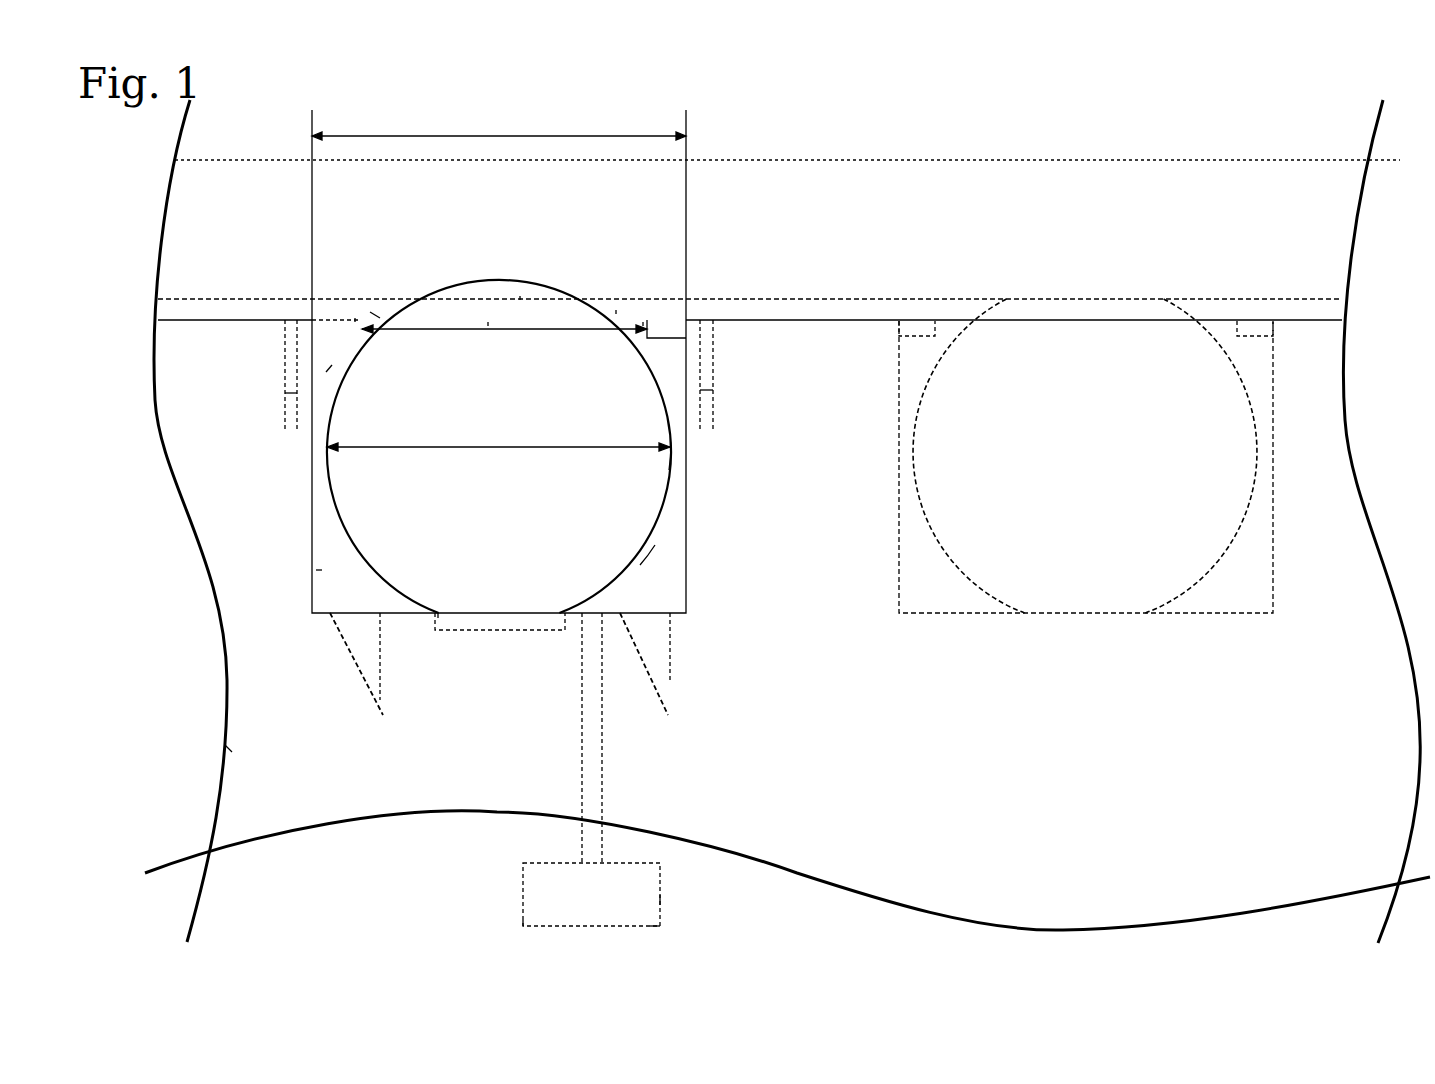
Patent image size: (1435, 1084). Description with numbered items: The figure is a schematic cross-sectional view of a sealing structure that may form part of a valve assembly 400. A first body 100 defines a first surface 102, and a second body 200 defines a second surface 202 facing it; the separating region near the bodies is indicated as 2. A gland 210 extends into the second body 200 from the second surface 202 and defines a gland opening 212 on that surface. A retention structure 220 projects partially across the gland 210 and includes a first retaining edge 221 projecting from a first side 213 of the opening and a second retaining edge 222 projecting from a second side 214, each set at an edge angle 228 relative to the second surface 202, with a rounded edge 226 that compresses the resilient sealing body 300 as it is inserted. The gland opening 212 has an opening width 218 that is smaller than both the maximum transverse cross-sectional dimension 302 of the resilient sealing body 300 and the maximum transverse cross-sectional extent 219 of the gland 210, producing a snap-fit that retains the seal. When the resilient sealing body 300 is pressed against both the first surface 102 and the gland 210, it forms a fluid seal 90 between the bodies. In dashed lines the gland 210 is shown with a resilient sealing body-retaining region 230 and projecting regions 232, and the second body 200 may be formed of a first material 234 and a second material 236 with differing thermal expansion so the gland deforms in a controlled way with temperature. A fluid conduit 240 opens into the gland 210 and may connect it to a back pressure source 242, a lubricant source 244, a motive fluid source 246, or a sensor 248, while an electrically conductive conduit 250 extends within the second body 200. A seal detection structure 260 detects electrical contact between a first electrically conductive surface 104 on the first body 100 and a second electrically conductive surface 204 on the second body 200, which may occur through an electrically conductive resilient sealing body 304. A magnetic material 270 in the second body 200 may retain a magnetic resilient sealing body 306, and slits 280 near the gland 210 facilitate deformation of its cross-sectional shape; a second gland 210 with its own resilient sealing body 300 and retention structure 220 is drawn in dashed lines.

The wall layer 2 is at (1410, 148).
The fluid seal 90 is at (617, 311).
The first body 100 is at (154, 244).
The first surface 102 is at (201, 300).
The first electrically conductive surface 104 is at (524, 297).
The second body 200 is at (216, 636).
The second surface 202 is at (178, 321).
The second electrically conductive surface 204 is at (440, 630).
The gland 210 is at (686, 590).
The gland opening 212 is at (489, 324).
The first side 213 is at (708, 390).
The second side 214 is at (288, 393).
The opening width 218 is at (490, 331).
The maximum transverse cross-sectional extent 219 is at (492, 136).
The retention structure 220 is at (330, 300).
The first retaining edge 221 is at (662, 318).
The second retaining edge 222 is at (356, 320).
The rounded edge 226 is at (645, 323).
The edge angle 228 is at (330, 370).
The resilient sealing body-retaining region 230 is at (324, 571).
The projecting regions 232 is at (378, 690).
The first material 234 is at (242, 756).
The second material 236 is at (365, 640).
The fluid conduit 240 is at (581, 791).
The back pressure source 242 is at (521, 896).
The lubricant source 244 is at (521, 926).
The motive fluid source 246 is at (655, 927).
The sensor 248 is at (662, 900).
The electrically conductive conduit 250 is at (603, 760).
The seal detection structure 260 is at (376, 314).
The magnetic material 270 is at (503, 635).
The slits 280 is at (291, 432).
The resilient sealing body 300 is at (670, 513).
The maximum transverse cross-sectional dimension 302 is at (495, 447).
The electrically conductive resilient sealing body 304 is at (655, 545).
The magnetic resilient sealing body 306 is at (680, 456).
The valve assembly 400 is at (1394, 101).